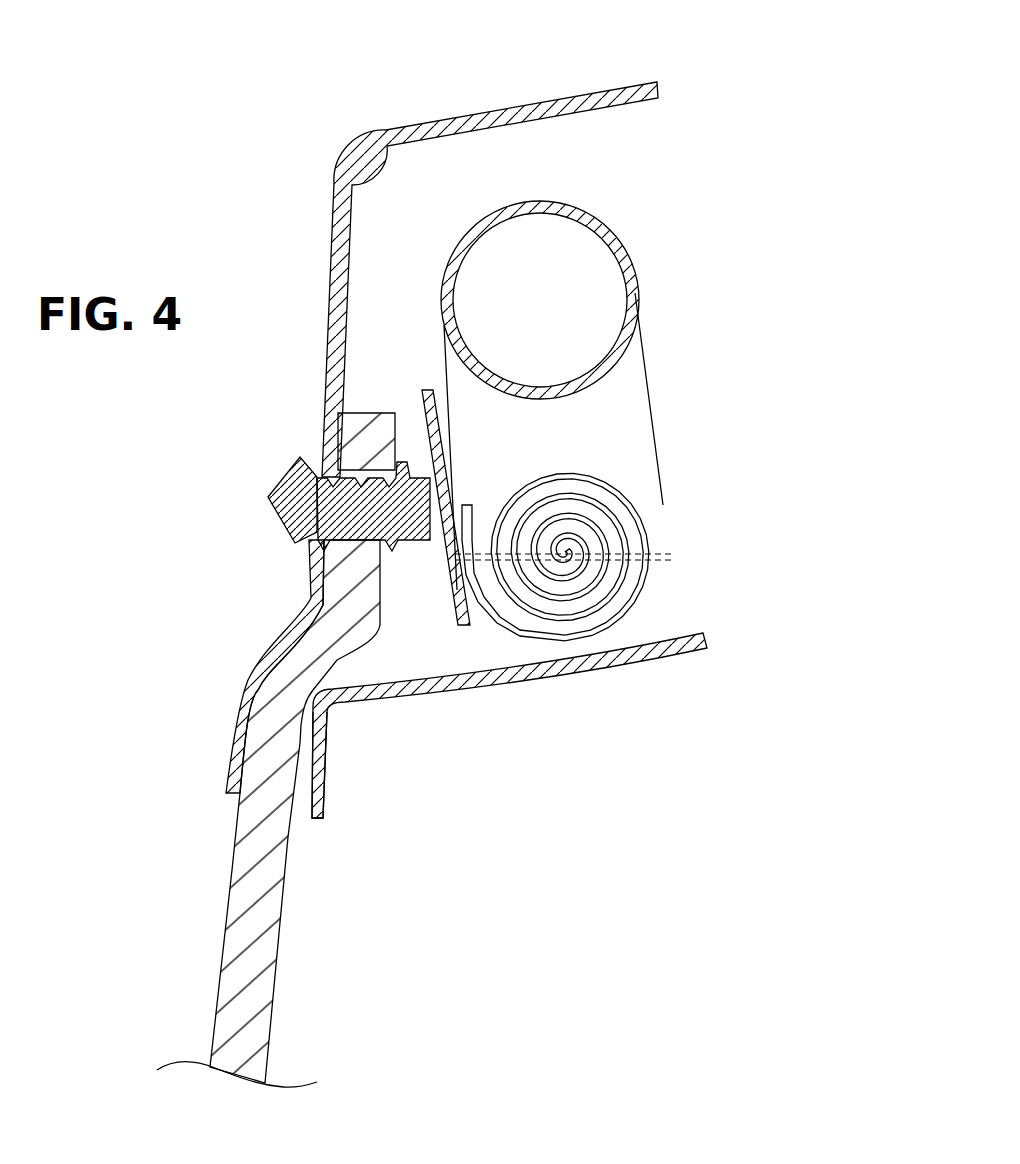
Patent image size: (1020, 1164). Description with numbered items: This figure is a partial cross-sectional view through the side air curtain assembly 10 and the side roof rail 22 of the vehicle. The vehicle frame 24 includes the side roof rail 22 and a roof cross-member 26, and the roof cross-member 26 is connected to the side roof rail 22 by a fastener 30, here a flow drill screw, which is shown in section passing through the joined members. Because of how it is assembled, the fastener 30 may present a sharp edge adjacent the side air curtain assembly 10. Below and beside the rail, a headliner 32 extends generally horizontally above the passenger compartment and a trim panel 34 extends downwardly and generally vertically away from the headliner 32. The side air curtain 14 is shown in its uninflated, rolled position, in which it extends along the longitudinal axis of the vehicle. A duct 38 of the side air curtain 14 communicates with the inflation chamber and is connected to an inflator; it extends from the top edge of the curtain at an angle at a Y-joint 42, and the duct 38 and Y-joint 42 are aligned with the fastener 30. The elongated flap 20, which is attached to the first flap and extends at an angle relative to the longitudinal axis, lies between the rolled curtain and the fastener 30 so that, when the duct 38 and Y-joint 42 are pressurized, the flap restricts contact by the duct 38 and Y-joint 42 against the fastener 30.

The side air curtain assembly 10 is at (738, 553).
The side air curtain 14 is at (645, 507).
The elongated flap 20 is at (447, 582).
The side roof rail 22 is at (288, 668).
The frame 24 is at (165, 776).
The roof cross-member 26 is at (505, 108).
The fastener 30 is at (270, 492).
The headliner 32 is at (684, 650).
The trim panel 34 is at (324, 807).
The duct 38 is at (594, 227).
The Y-joint 42 is at (655, 408).